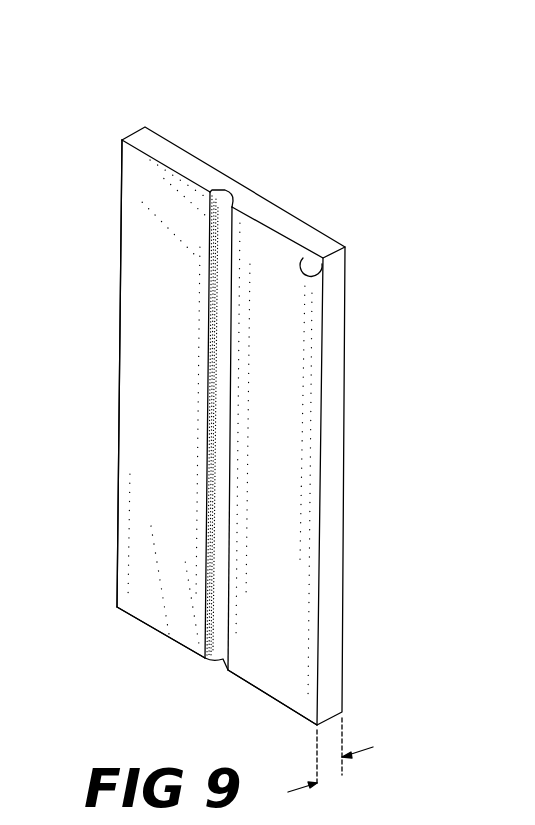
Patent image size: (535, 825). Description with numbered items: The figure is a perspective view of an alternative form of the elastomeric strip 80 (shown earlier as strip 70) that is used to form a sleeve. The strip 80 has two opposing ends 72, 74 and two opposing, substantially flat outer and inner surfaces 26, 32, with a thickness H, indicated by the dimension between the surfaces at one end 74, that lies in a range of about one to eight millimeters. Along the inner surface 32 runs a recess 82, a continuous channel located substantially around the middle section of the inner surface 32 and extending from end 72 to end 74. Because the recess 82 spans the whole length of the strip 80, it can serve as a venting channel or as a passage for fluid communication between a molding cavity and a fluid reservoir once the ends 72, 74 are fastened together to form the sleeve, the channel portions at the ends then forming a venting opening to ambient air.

The outer surface 26 is at (296, 214).
The strip 80 is at (146, 143).
The recess 82 is at (228, 197).
The end 72 is at (323, 277).
The strip 70 is at (135, 512).
The inner surface 32 is at (174, 616).
The end 74 is at (285, 708).
The thickness H is at (330, 755).